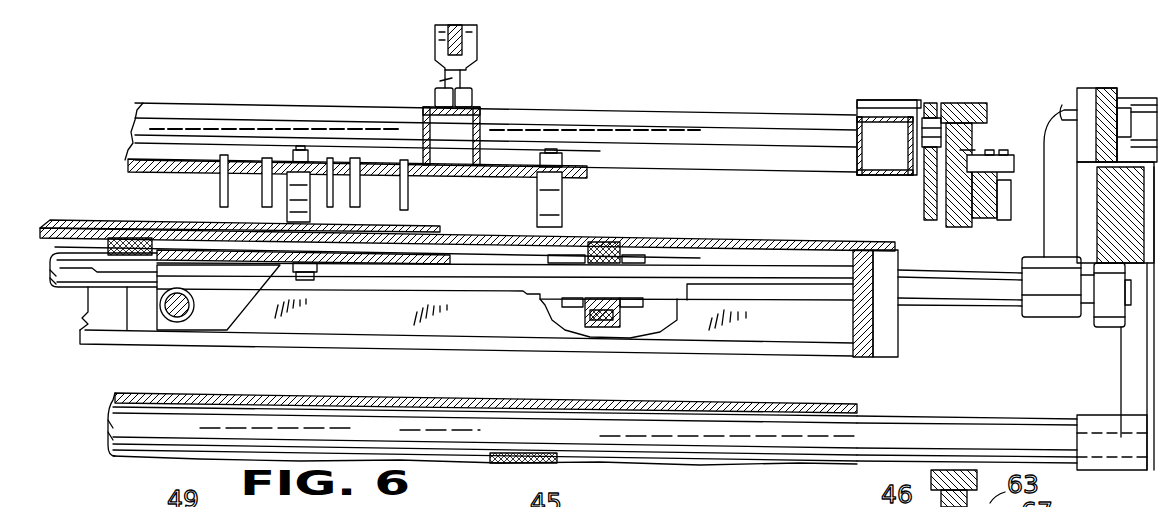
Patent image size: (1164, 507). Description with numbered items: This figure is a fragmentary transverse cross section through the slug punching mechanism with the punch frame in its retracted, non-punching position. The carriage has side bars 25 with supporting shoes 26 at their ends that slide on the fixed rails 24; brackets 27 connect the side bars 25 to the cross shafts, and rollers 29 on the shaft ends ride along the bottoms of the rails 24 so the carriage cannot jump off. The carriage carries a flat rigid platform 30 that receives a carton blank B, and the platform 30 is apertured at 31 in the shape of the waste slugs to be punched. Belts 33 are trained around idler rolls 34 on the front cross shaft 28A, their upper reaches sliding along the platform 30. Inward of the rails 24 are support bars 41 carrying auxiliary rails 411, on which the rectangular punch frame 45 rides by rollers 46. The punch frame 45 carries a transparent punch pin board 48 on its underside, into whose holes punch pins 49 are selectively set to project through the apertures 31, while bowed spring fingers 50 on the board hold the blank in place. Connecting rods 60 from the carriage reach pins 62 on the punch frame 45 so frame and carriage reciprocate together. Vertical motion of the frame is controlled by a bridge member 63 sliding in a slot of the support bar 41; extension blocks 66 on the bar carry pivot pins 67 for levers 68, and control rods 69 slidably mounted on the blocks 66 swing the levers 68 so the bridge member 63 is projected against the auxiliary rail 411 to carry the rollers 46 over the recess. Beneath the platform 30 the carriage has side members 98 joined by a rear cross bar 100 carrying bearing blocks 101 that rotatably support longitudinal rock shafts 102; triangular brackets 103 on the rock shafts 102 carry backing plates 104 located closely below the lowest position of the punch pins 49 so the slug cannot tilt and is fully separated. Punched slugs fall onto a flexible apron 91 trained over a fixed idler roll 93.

The connecting rods 60 is at (462, 43).
The pins 62 is at (455, 80).
The punch frame 45 is at (688, 115).
The rollers 46 is at (934, 128).
The bridge member 63 is at (977, 150).
The pivot pins 67 is at (997, 152).
The levers 68 is at (1005, 165).
The side bars 25 is at (1104, 90).
The supporting shoes 26 is at (1137, 98).
The punch pin board 48 is at (127, 170).
The punch pins 49 is at (262, 188).
The bowed spring fingers 50 is at (293, 200).
The apertures 31 is at (428, 233).
The belts 33 is at (597, 242).
The idler rolls 34 is at (612, 242).
The carton blank B is at (686, 238).
The platform 30 is at (757, 240).
The auxiliary rails 411 is at (931, 218).
The support bars 41 is at (954, 227).
The extension blocks 66 is at (984, 218).
The control rods 69 is at (1002, 222).
The rails 24 is at (1097, 207).
The front cross shaft 28A is at (982, 297).
The brackets 27 is at (1041, 307).
The rollers 29 is at (1104, 327).
The rock shafts 102 is at (170, 318).
The bearing blocks 101 is at (210, 323).
The triangular brackets 103 is at (230, 290).
The backing plates 104 is at (350, 262).
The rear cross bar 100 is at (503, 343).
The side members 98 is at (860, 345).
The flexible apron 91 is at (688, 410).
The fixed idler roll 93 is at (954, 428).